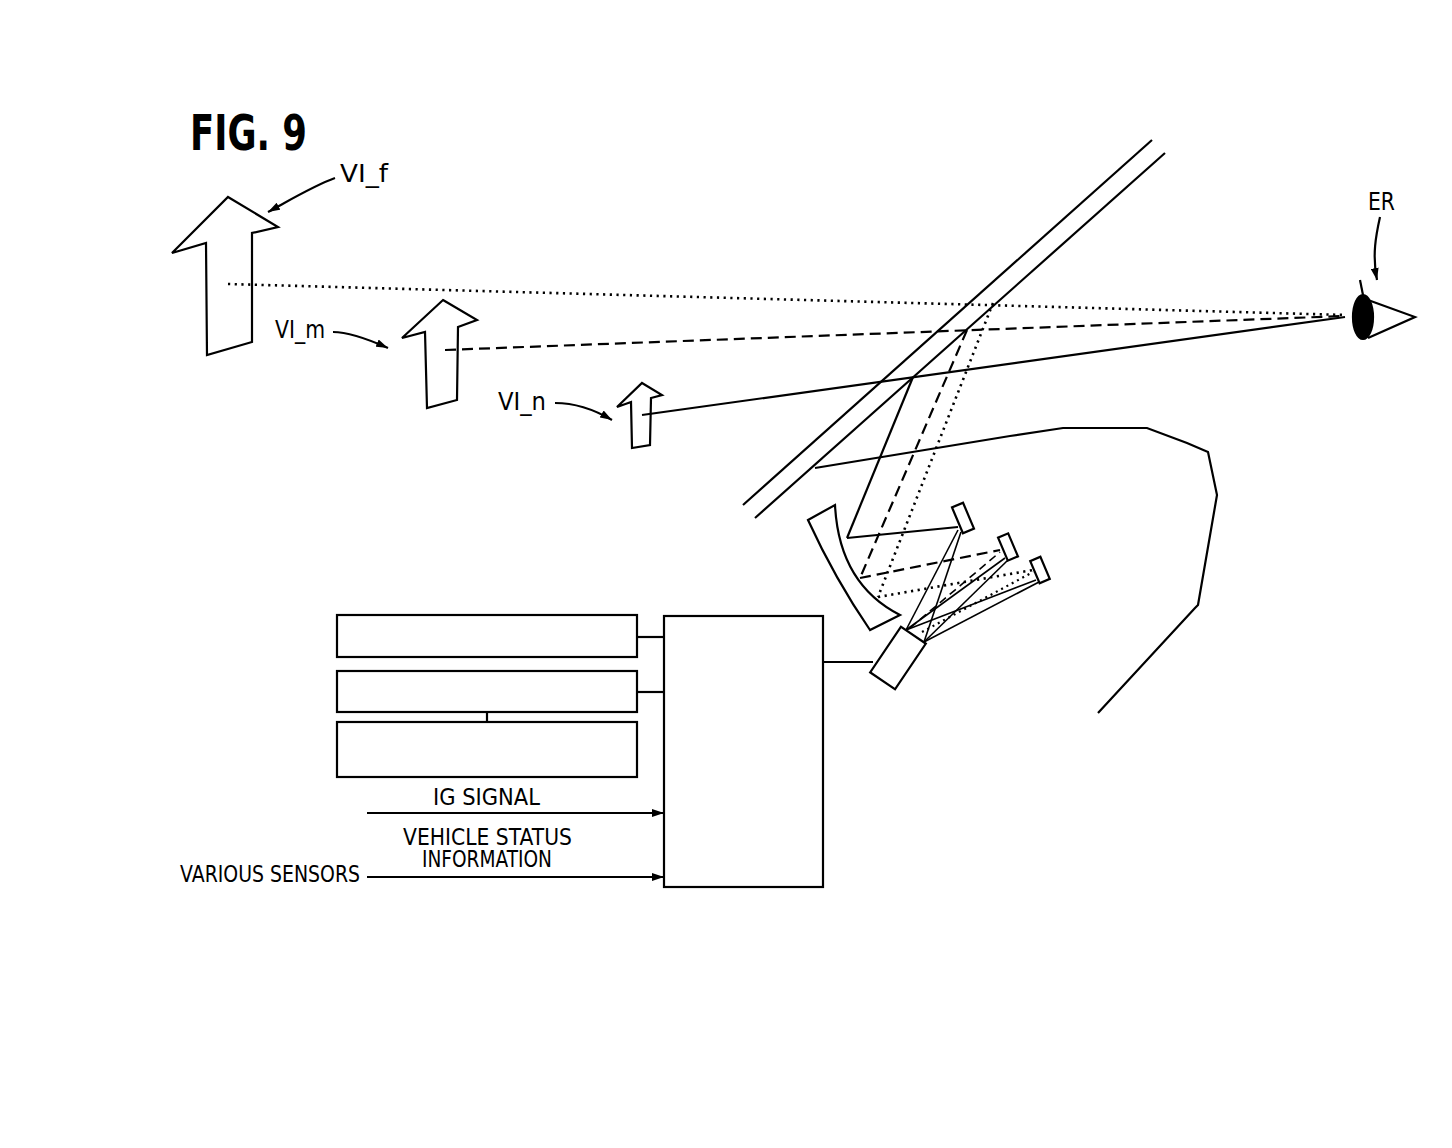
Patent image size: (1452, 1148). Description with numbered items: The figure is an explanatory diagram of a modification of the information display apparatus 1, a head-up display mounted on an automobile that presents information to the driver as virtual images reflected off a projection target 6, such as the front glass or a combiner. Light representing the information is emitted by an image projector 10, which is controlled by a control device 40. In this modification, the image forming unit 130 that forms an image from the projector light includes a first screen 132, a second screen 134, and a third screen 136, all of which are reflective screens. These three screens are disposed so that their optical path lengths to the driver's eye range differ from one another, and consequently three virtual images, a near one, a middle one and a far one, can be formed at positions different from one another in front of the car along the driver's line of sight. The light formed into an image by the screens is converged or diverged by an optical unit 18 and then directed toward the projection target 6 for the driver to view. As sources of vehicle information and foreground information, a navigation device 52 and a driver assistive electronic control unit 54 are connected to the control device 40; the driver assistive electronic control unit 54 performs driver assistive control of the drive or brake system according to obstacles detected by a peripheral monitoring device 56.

The information display apparatus 1 is at (740, 543).
The projection target 6 is at (1037, 240).
The image projector 10 is at (917, 664).
The optical unit 18 is at (830, 567).
The control device 40 is at (823, 843).
The navigation device 52 is at (337, 633).
The driver assistive electronic control unit 54 is at (337, 688).
The peripheral monitoring device 56 is at (337, 745).
The image forming unit 130 is at (1092, 480).
The first screen 132 is at (973, 527).
The second screen 134 is at (1017, 545).
The third screen 136 is at (1048, 567).